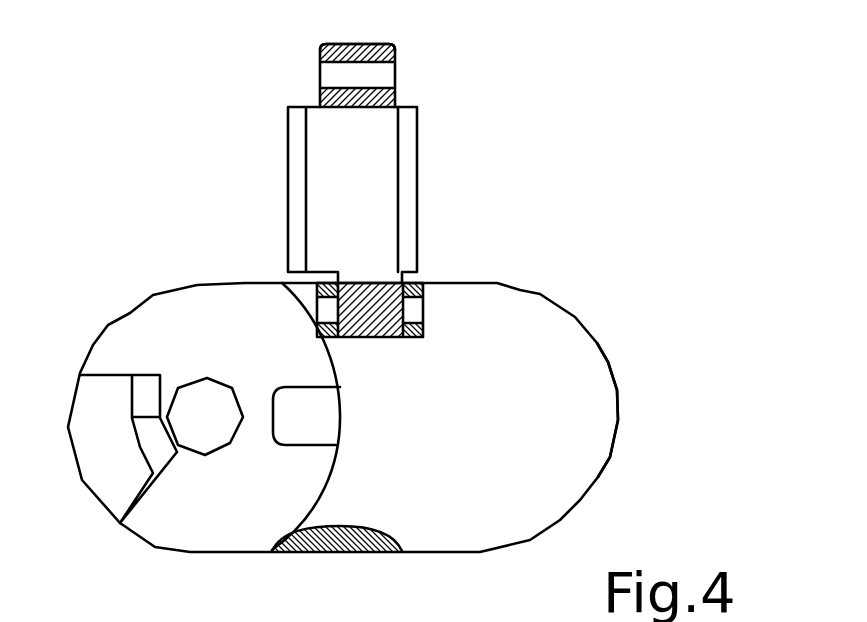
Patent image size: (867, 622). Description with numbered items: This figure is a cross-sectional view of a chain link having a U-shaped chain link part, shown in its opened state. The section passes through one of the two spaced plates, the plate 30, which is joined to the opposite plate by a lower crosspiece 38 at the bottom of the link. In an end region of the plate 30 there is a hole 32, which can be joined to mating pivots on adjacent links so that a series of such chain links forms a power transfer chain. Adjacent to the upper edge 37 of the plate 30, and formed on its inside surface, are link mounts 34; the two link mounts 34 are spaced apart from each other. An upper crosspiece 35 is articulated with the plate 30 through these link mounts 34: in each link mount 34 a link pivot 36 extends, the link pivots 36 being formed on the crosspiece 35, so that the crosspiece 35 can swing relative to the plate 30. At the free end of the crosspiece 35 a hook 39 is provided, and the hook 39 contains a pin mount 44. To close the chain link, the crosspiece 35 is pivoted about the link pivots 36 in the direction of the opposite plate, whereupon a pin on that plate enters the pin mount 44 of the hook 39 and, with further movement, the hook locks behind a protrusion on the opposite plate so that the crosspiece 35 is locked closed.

The plate 30 is at (583, 368).
The hole 32 is at (214, 433).
The link mount 34 is at (325, 340).
The upper crosspiece 35 is at (403, 185).
The link pivot 36 is at (315, 307).
The upper edge 37 is at (497, 283).
The lower crosspiece 38 is at (342, 540).
The hook 39 is at (330, 44).
The pin mount 44 is at (377, 76).